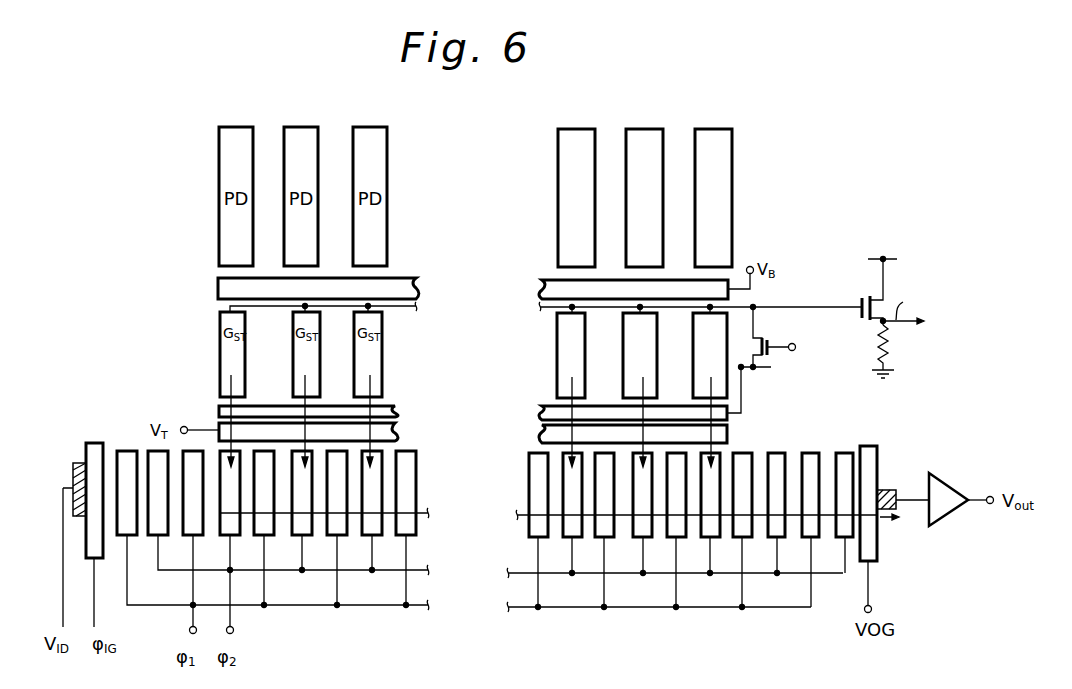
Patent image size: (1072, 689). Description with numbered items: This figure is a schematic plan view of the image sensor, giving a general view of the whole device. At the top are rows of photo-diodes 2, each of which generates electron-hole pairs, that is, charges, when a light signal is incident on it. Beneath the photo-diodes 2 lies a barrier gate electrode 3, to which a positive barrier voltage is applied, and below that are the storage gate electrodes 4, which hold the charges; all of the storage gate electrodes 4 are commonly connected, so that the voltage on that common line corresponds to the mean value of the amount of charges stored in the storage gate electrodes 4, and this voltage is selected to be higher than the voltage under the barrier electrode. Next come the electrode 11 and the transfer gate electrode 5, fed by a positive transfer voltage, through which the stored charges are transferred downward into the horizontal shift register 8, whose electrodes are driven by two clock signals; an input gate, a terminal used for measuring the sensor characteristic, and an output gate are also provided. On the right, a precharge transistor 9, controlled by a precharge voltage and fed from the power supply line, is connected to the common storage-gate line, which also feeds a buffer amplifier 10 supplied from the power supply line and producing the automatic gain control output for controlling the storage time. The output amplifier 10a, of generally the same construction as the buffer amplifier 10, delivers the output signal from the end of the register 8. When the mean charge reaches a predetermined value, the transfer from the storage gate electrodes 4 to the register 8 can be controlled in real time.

The photo-diode 2 is at (732, 143).
The barrier gate electrode 3 is at (722, 280).
The storage gate electrode 4 is at (693, 357).
The transfer gate electrode 5 is at (728, 437).
The horizontal shift register 8 is at (529, 470).
The precharge transistor 9 is at (772, 360).
The buffer amplifier 10 is at (868, 290).
The output amplifier 10a is at (948, 483).
The comparator 11 is at (219, 410).